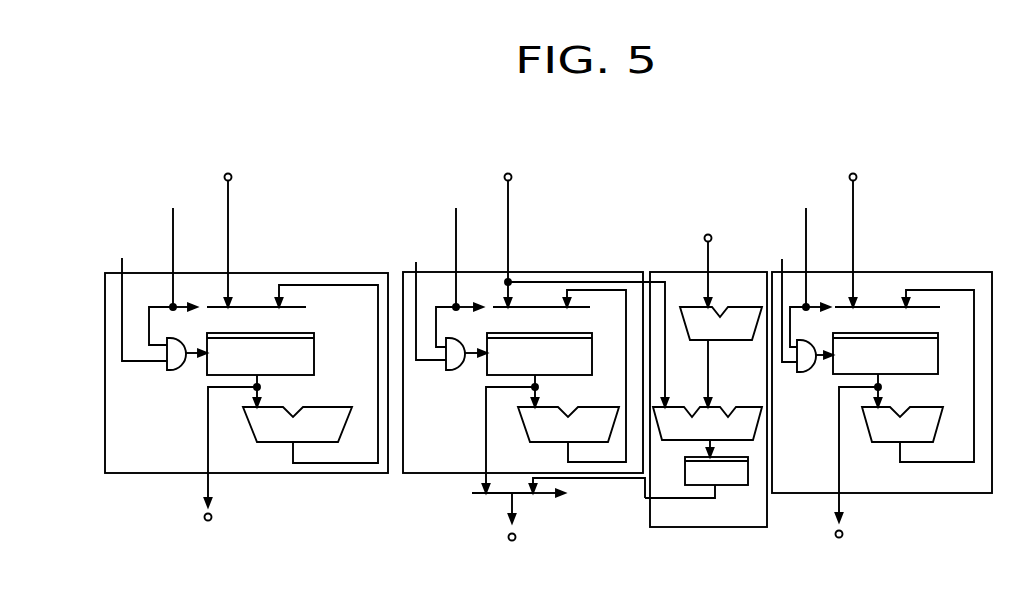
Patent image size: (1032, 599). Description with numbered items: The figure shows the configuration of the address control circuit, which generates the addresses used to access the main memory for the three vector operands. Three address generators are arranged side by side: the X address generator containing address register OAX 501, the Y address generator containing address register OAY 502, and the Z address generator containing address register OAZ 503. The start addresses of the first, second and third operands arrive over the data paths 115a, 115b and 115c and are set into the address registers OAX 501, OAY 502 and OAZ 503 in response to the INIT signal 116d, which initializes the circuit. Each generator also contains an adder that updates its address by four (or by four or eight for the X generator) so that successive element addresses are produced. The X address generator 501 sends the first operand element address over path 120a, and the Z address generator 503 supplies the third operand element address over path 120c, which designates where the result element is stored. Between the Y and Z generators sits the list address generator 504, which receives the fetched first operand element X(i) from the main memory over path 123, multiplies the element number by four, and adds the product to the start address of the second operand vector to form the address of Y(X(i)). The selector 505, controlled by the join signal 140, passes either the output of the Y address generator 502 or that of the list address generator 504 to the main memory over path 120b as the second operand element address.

The address register OAX 501 is at (308, 273).
The address register OAY 502 is at (570, 272).
The address register OAZ 503 is at (966, 272).
The list address generator 504 is at (703, 528).
The selector 505 is at (472, 493).
The first operand start address data path 115a is at (228, 245).
The second operand start address data path 115b is at (508, 240).
The third operand start address data path 115c is at (853, 220).
The INIT signal 116d is at (173, 245).
The first operand element address path 120a is at (208, 486).
The second operand element address path 120b is at (510, 501).
The third operand element address path 120c is at (841, 510).
The list address path 123 is at (706, 258).
The join signal 140 is at (564, 497).